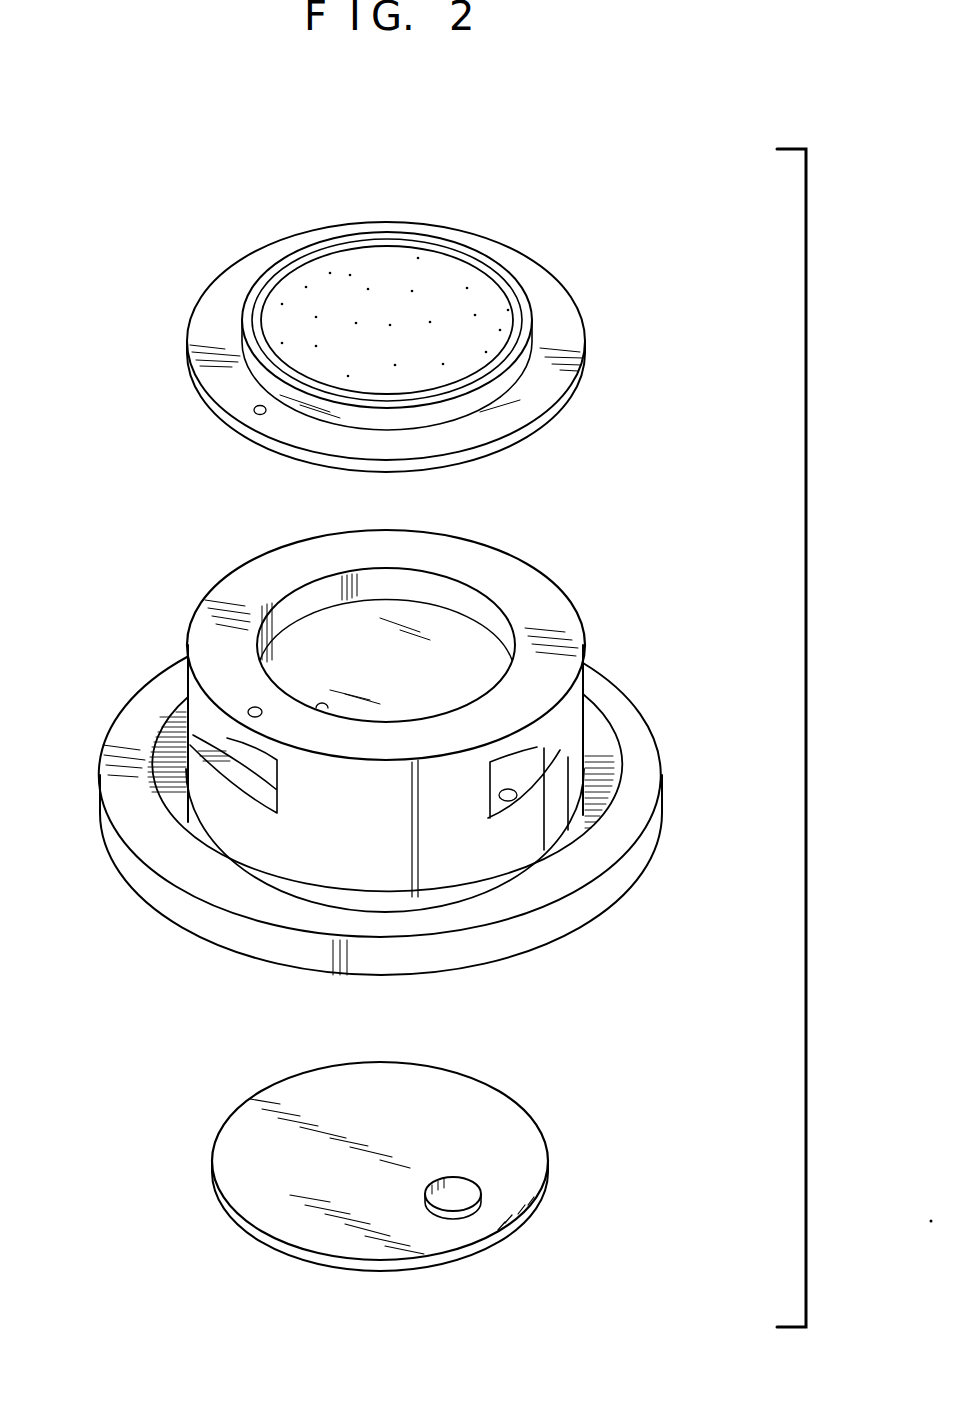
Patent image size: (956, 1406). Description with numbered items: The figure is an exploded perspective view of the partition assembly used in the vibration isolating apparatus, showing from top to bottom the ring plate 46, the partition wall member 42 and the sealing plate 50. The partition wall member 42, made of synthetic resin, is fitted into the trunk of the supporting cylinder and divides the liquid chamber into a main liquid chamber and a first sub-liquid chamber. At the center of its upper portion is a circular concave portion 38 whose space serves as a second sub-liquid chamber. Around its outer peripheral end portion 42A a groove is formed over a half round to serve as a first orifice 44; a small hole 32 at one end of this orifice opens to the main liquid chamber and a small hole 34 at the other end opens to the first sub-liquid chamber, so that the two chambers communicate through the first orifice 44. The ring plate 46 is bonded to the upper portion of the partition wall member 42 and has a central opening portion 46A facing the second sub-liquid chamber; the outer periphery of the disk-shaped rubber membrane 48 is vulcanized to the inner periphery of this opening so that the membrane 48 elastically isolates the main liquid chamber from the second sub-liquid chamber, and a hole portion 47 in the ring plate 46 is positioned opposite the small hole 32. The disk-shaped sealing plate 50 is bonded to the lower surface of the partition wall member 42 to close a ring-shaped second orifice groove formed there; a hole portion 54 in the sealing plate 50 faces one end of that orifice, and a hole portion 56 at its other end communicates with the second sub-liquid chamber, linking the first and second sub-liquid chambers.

The small hole 32 is at (253, 707).
The small hole 34 is at (517, 794).
The circular concave portion 38 is at (460, 640).
The partition wall member 42 is at (410, 742).
The outer peripheral end portion 42A is at (225, 808).
The first orifice 44 is at (553, 750).
The ring plate 46 is at (434, 320).
The opening portion 46A is at (486, 258).
The hole portion 47 is at (254, 409).
The membrane 48 is at (427, 288).
The sealing plate 50 is at (450, 1156).
The hole portion 54 is at (468, 1187).
The hole portion 56 is at (318, 705).